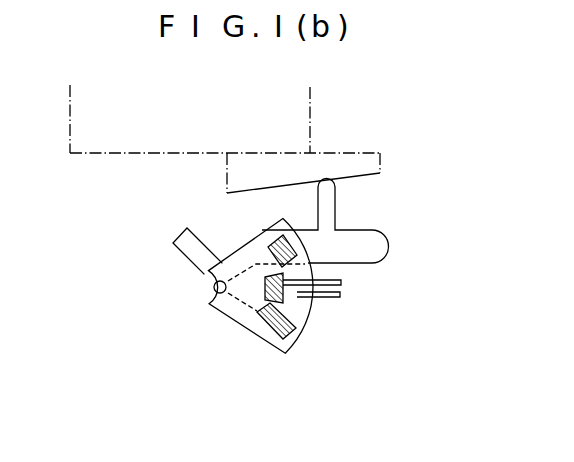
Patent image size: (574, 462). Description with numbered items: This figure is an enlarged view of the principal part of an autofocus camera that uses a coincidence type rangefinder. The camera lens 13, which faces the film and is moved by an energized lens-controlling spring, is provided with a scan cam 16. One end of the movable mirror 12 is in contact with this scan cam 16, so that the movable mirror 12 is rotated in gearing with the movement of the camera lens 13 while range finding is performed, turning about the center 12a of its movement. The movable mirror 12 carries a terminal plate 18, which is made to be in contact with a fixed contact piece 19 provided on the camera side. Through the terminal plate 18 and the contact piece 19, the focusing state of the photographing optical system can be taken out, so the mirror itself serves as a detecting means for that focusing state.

The camera lens 13 is at (102, 153).
The scan cam 16 is at (227, 186).
The movable mirror 12 is at (187, 258).
The center of the movement 12a is at (210, 300).
The terminal plate 18 is at (300, 338).
The fixed contact piece 19 is at (340, 298).